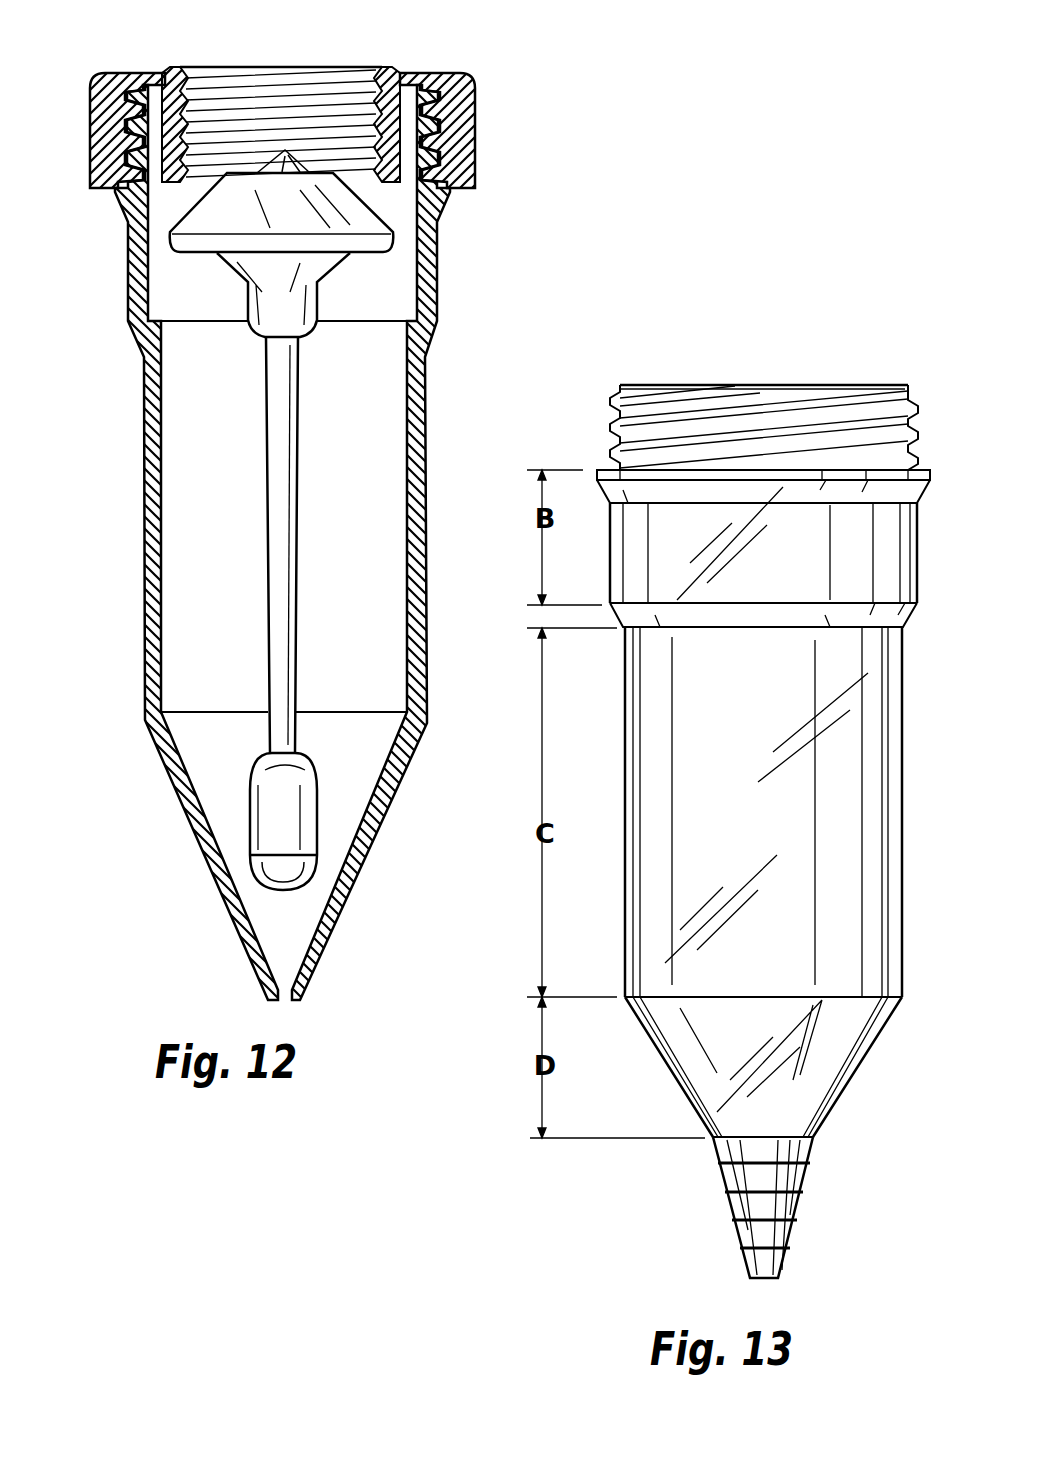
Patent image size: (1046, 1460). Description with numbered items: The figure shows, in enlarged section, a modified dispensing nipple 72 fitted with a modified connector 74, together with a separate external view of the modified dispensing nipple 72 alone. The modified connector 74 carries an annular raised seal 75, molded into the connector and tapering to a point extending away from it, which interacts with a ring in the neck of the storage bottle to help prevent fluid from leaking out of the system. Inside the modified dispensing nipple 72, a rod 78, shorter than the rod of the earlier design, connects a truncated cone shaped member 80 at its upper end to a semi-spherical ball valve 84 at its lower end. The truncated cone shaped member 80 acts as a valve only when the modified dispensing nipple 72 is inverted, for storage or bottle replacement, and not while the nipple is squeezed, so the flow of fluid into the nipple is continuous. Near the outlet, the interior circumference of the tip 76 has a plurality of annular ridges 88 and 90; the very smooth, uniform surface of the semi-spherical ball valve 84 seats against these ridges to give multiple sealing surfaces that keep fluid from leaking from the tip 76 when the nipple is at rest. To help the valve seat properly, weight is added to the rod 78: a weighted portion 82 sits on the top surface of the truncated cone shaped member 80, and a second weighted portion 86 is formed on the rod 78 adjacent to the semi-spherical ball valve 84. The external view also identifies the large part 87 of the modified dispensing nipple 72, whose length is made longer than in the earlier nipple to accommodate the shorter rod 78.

In FIG. 12, the modified dispensing nipple 72 is at (122, 529).
In FIG. 13, the modified dispensing nipple 72 is at (606, 787).
In FIG. 12, the modified connector 74 is at (484, 140).
In FIG. 12, the annular raised seal 75 is at (386, 66).
In FIG. 12, the tip 76 is at (226, 952).
In FIG. 12, the rod 78 is at (283, 480).
In FIG. 12, the truncated cone shaped member 80 is at (392, 238).
In FIG. 12, the weighted portion 82 is at (292, 148).
In FIG. 12, the semi-spherical ball valve 84 is at (305, 952).
In FIG. 12, the second weighted portion 86 is at (268, 812).
In FIG. 12, the large part 87 is at (438, 292).
In FIG. 13, the large part 87 is at (609, 533).
In FIG. 12, the annular ridge 88 is at (305, 843).
In FIG. 12, the annular ridge 90 is at (302, 903).